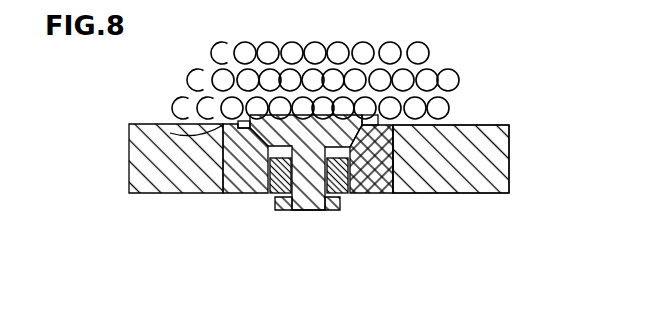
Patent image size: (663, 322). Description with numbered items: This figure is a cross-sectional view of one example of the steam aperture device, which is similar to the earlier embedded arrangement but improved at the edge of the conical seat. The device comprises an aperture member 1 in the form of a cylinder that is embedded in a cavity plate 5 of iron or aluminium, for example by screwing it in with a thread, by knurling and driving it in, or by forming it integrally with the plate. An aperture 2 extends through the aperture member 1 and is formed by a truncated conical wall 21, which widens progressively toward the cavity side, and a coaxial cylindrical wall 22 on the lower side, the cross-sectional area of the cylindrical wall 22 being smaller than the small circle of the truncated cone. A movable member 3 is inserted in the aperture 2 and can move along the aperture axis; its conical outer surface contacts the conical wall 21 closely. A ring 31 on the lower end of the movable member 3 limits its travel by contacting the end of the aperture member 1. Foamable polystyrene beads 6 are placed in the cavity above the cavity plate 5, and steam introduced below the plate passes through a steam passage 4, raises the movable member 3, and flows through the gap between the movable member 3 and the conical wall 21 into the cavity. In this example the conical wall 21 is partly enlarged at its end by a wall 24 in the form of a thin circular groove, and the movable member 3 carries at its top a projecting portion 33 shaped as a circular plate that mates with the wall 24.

The aperture member 1 is at (416, 180).
The aperture 2 is at (143, 207).
The truncated conical wall 21 is at (204, 193).
The cylindrical wall 22 is at (266, 193).
The wall 24 is at (172, 122).
The movable member 3 is at (312, 211).
The ring 31 is at (273, 200).
The steam passage 4 is at (346, 198).
The cavity plate 5 is at (496, 127).
The foamable polystyrene beads 6 is at (428, 88).
The projecting portion 33 is at (245, 85).